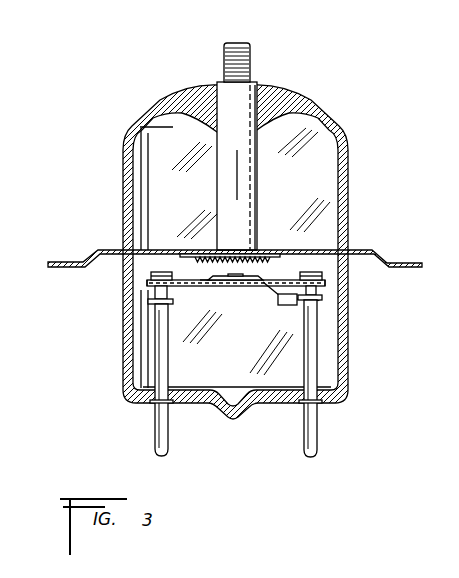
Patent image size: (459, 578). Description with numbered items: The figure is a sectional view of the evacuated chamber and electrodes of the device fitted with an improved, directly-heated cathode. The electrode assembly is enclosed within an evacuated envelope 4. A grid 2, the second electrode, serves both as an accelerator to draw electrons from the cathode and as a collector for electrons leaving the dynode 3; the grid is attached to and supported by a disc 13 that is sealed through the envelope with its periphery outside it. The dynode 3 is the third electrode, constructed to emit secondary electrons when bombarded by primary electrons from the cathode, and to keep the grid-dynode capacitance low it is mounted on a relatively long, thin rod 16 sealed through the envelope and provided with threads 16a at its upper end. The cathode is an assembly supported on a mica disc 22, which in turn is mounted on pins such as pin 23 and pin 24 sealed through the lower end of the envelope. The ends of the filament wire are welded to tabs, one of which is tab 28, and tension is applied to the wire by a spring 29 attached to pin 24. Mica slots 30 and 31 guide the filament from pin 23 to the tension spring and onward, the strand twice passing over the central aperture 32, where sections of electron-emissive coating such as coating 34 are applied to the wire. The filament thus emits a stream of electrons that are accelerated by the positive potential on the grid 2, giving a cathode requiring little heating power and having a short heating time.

The grid 2 is at (258, 252).
The dynode 3 is at (257, 240).
The evacuated envelope 4 is at (344, 352).
The disc 13 is at (373, 252).
The rod 16 is at (254, 164).
The threads 16a is at (252, 53).
The mica disc 22 is at (180, 280).
The pin 23 is at (155, 428).
The pin 24 is at (317, 439).
The tab 28 is at (192, 285).
The spring 29 is at (289, 306).
The mica slot 30 is at (203, 287).
The mica slot 31 is at (262, 287).
The central aperture 32 is at (237, 287).
The coating 34 is at (248, 275).